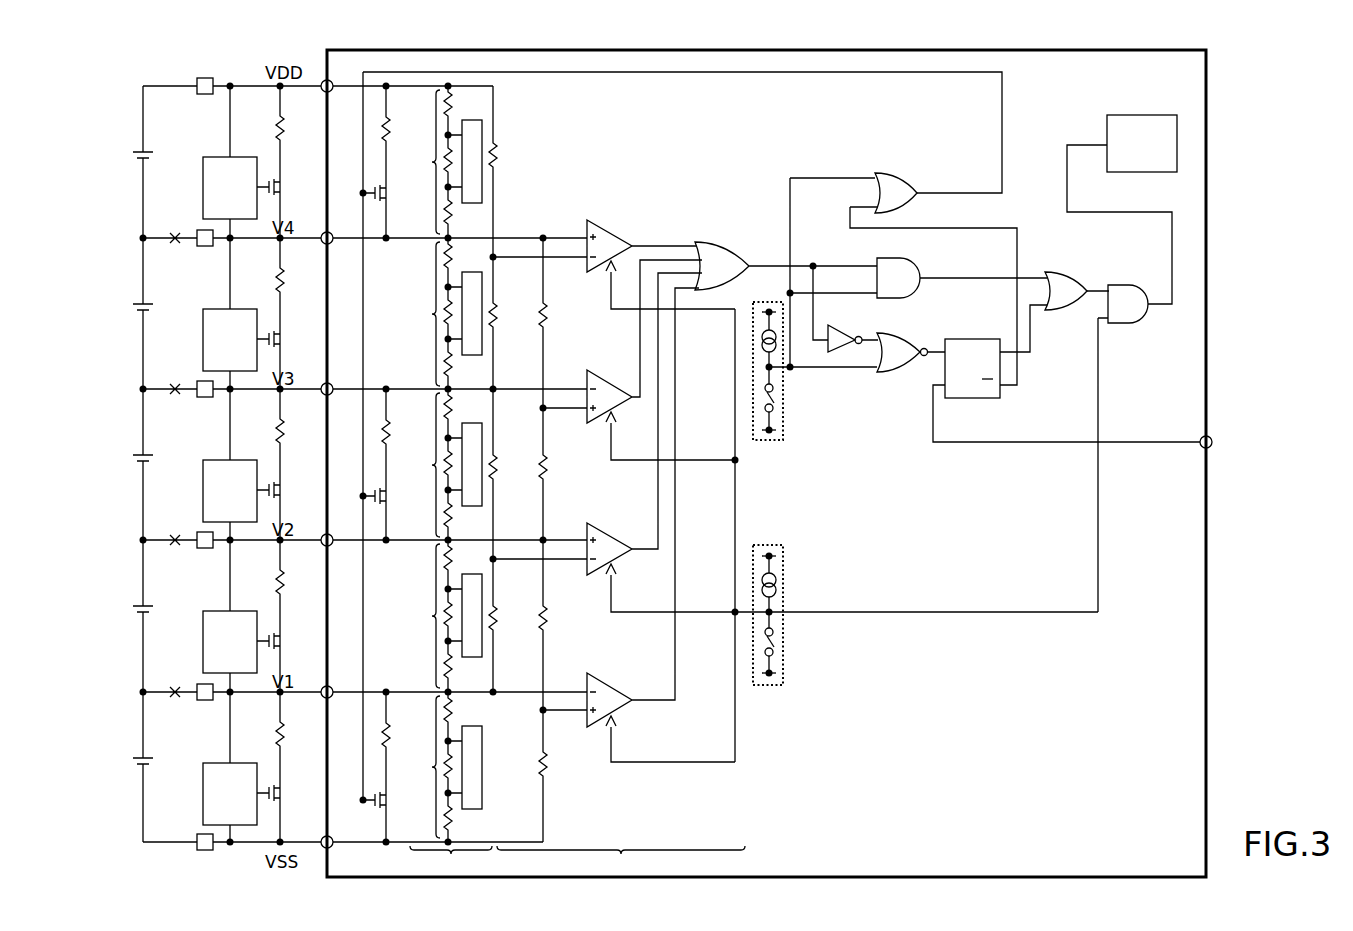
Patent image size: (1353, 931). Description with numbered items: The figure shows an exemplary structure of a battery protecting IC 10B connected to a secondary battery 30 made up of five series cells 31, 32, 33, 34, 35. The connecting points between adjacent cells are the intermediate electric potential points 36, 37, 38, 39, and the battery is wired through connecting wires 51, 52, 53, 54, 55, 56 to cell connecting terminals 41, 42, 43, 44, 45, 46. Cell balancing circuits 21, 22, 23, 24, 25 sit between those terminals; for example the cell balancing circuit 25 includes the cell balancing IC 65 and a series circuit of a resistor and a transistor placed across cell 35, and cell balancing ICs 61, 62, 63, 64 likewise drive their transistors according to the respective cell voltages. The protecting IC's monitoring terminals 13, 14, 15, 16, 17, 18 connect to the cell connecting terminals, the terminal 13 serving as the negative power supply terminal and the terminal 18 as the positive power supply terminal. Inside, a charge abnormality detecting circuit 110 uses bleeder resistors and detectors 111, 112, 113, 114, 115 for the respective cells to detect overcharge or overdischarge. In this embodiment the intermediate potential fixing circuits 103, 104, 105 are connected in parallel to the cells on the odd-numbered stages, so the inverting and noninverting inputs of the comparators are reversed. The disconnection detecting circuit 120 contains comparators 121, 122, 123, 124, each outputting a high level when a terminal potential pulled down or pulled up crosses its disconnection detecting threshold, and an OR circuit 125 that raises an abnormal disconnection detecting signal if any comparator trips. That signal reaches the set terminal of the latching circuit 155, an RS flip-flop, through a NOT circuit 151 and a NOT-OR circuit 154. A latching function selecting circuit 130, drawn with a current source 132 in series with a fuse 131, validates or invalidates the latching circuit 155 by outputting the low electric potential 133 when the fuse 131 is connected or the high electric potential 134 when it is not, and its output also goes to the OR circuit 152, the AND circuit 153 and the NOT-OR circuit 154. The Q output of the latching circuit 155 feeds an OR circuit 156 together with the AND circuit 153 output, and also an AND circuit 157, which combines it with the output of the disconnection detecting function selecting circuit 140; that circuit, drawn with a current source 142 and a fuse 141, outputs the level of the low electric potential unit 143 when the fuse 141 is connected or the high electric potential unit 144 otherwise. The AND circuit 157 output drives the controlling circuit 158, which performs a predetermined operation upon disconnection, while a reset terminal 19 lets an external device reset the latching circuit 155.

The battery protecting IC 10B is at (1207, 74).
The secondary battery 30 is at (121, 464).
The cell 31 is at (132, 762).
The cell 32 is at (132, 610).
The cell 33 is at (132, 459).
The cell 34 is at (132, 308).
The cell 35 is at (132, 156).
The intermediate electric potential point 36 is at (134, 692).
The intermediate electric potential point 37 is at (134, 540).
The intermediate electric potential point 38 is at (134, 389).
The intermediate electric potential point 39 is at (134, 238).
The cell connecting terminal 41 is at (210, 851).
The cell connecting terminal 42 is at (205, 702).
The cell connecting terminal 43 is at (205, 550).
The cell connecting terminal 44 is at (205, 399).
The cell connecting terminal 45 is at (205, 248).
The cell connecting terminal 46 is at (205, 96).
The connecting wire 51 is at (158, 847).
The connecting wire 52 is at (152, 698).
The connecting wire 53 is at (152, 546).
The connecting wire 54 is at (152, 395).
The connecting wire 55 is at (152, 244).
The connecting wire 56 is at (152, 92).
The cell balancing IC 61 is at (236, 764).
The cell balancing IC 62 is at (236, 612).
The cell balancing IC 63 is at (236, 461).
The cell balancing IC 64 is at (236, 310).
The cell balancing IC 65 is at (236, 158).
The cell balancing circuit 21 is at (228, 767).
The cell balancing circuit 22 is at (228, 616).
The cell balancing circuit 23 is at (228, 464).
The cell balancing circuit 24 is at (228, 313).
The cell balancing circuit 25 is at (228, 162).
The outer terminal 13 is at (325, 836).
The outer terminal 14 is at (325, 686).
The outer terminal 15 is at (325, 534).
The outer terminal 16 is at (325, 383).
The outer terminal 17 is at (325, 232).
The outer terminal 18 is at (325, 80).
The reset terminal 19 is at (1211, 437).
The intermediate potential fixing circuit 103 is at (386, 681).
The intermediate potential fixing circuit 104 is at (386, 378).
The intermediate potential fixing circuit 105 is at (386, 254).
The charge abnormality detecting circuit 110 is at (441, 482).
The detector 111 is at (465, 726).
The detector 112 is at (465, 574).
The detector 113 is at (465, 423).
The detector 114 is at (465, 272).
The detector 115 is at (465, 120).
The disconnection detecting circuit 120 is at (793, 482).
The comparator 121 is at (604, 679).
The comparator 122 is at (604, 530).
The comparator 123 is at (604, 378).
The comparator 124 is at (604, 227).
The OR circuit 125 is at (750, 250).
The latching function selecting circuit 130 is at (792, 367).
The fuse 131 is at (775, 398).
The current source 132 is at (777, 348).
The low electric potential 133 is at (777, 430).
The high electric potential 134 is at (768, 302).
The disconnection detecting function selecting circuit 140 is at (794, 629).
The fuse 141 is at (775, 642).
The current source 142 is at (777, 588).
The low electric potential unit 143 is at (777, 673).
The high electric potential unit 144 is at (777, 556).
The NOT circuit 151 is at (832, 332).
The OR circuit 152 is at (912, 178).
The AND circuit 153 is at (910, 260).
The NOT-OR circuit 154 is at (904, 338).
The latching circuit 155 is at (970, 338).
The OR circuit 156 is at (1072, 276).
The AND circuit 157 is at (1128, 323).
The controlling circuit 158 is at (1136, 115).